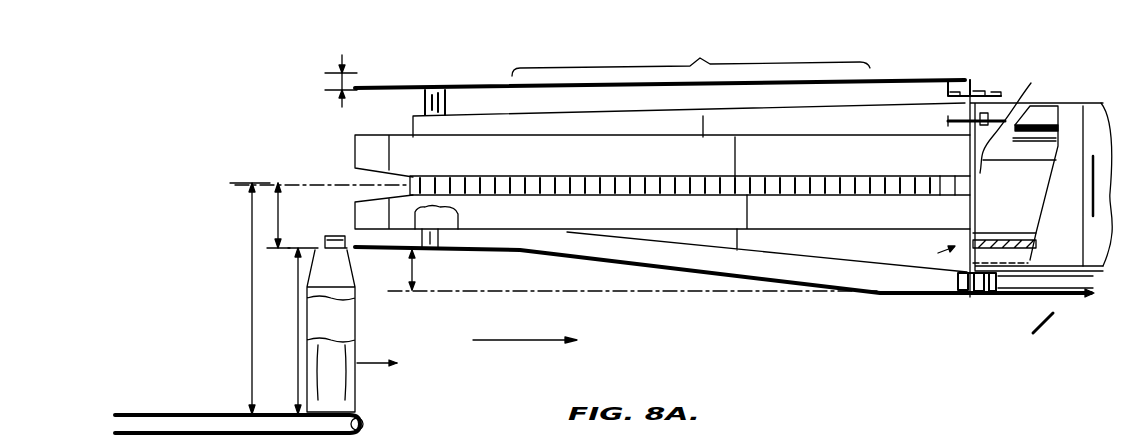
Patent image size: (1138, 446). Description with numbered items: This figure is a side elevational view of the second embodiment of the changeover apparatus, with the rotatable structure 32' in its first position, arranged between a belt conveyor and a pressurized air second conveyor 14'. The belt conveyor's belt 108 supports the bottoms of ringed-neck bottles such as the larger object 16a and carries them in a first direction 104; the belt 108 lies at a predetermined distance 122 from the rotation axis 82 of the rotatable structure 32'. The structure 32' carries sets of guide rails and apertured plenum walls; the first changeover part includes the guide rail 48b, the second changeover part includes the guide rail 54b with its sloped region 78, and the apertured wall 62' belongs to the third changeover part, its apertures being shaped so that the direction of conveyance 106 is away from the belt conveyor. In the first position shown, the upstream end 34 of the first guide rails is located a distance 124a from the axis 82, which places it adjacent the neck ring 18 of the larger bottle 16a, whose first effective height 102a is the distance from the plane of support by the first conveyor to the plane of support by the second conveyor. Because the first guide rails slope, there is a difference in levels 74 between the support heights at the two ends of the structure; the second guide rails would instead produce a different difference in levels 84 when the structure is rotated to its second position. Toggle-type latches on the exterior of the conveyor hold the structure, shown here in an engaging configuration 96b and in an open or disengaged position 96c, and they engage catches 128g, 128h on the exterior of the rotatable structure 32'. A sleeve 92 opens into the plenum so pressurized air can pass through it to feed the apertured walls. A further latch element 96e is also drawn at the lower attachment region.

The rotatable structure 32' is at (660, 86).
The difference in levels 84 is at (322, 76).
The sloped region 78 is at (691, 57).
The second guide rail 54b is at (514, 85).
The upstream end 34 is at (347, 127).
The rotation axis 82 is at (340, 177).
The apertured wall 62' is at (690, 254).
The second guide rail 48b is at (739, 275).
The difference in levels 74 is at (405, 260).
The predetermined distance 122 is at (243, 277).
The distance 124a is at (272, 200).
The first effective height 102a is at (288, 331).
The ringed-neck bottle 16a is at (342, 339).
The neck ring 18 is at (319, 229).
The first direction 104 is at (359, 357).
The belt 108 is at (214, 402).
The direction of conveyance 106 is at (507, 332).
The sleeve 92 is at (1050, 95).
The latch in engaging configuration 96b is at (965, 88).
The latch in disengaged position 96c is at (1020, 120).
The catch 128g is at (940, 113).
The catch 128h is at (924, 256).
The clip 96e is at (963, 290).
The second conveyor 14' is at (1030, 331).